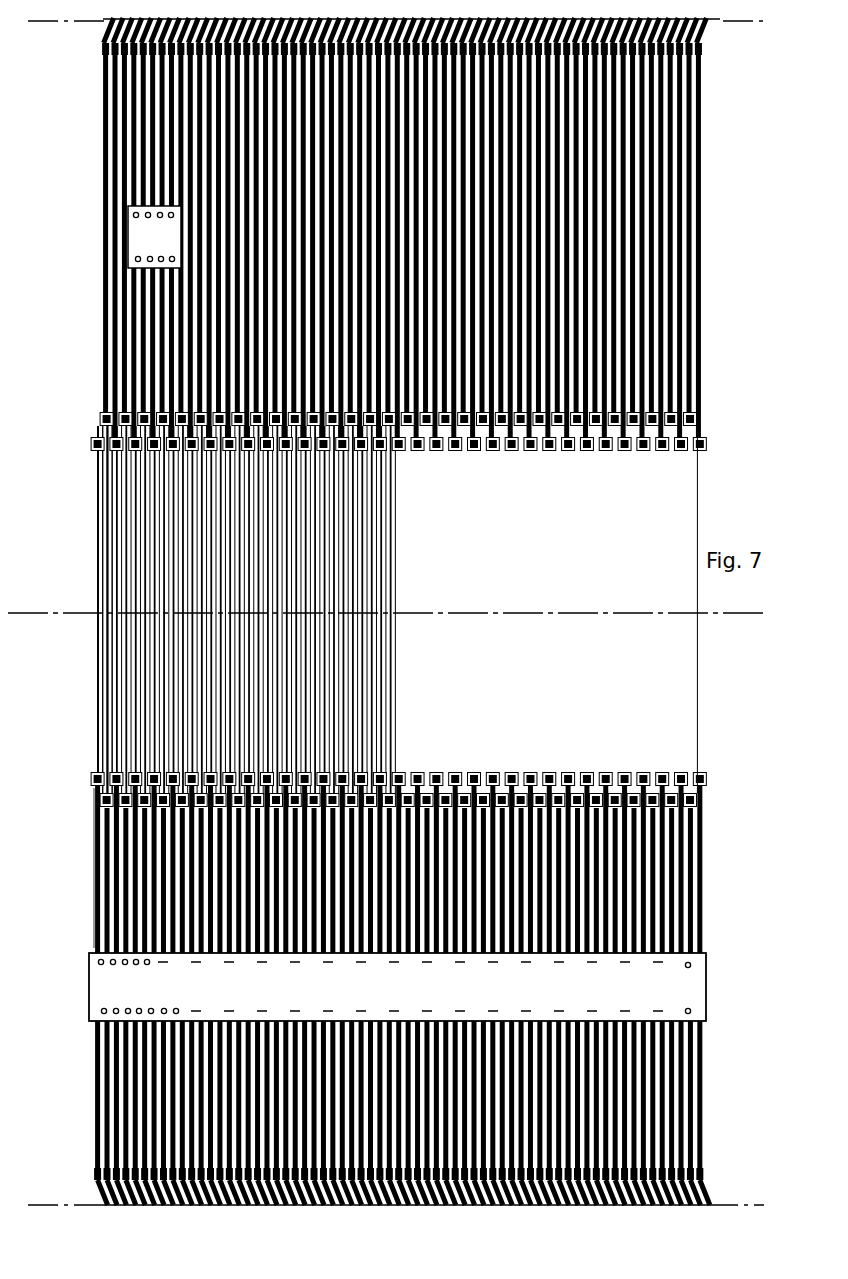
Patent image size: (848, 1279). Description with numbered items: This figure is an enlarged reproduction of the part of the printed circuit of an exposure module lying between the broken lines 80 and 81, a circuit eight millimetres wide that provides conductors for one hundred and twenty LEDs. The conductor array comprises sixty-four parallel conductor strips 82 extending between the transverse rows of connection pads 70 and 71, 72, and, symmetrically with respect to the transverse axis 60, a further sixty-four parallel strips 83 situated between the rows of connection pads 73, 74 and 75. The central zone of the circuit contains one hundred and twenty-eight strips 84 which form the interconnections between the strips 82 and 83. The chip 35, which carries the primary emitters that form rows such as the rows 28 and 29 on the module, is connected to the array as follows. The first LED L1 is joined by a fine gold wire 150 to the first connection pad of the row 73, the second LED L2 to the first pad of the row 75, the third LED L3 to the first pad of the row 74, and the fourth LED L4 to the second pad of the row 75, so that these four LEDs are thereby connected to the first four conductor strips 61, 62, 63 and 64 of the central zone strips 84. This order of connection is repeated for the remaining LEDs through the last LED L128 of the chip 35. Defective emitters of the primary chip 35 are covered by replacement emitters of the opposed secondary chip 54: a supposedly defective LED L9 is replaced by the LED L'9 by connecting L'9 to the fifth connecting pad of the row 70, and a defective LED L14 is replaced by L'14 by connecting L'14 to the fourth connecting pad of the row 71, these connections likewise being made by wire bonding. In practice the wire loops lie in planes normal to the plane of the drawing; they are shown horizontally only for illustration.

The row of connection pads 70 is at (127, 197).
The broken line 80 is at (735, 16).
The parallel conductor strips 82 is at (650, 243).
The central zone strips 84 is at (655, 706).
The parallel conductor strips 83 is at (665, 848).
The broken line 81 is at (712, 1196).
The row of connection pads 71 is at (94, 412).
The row of connection pads 72 is at (90, 437).
The row of connection pads 73 is at (90, 771).
The row of connection pads 74 is at (98, 794).
The transverse axis 60 is at (40, 606).
The first conductor strip 61 is at (92, 632).
The second conductor strip 62 is at (96, 664).
The third conductor strip 63 is at (100, 700).
The fourth conductor strip 64 is at (104, 738).
The secondary chip 54 is at (120, 248).
The replacement LED L'9 is at (96, 193).
The replacement LED L'14 is at (96, 270).
The chip 35 is at (410, 990).
The first LED L1 is at (91, 953).
The third LED L3 is at (103, 955).
The ninth LED L9 is at (139, 958).
The second LED L2 is at (94, 1004).
The fourth LED L4 is at (107, 1006).
The fourteenth LED L14 is at (169, 1002).
The row of emitters 28 is at (683, 958).
The row of emitters 29 is at (683, 1003).
The last LED L128 is at (684, 1006).
The fine wire 150 is at (86, 782).
The row of connection pads 75 is at (72, 1030).